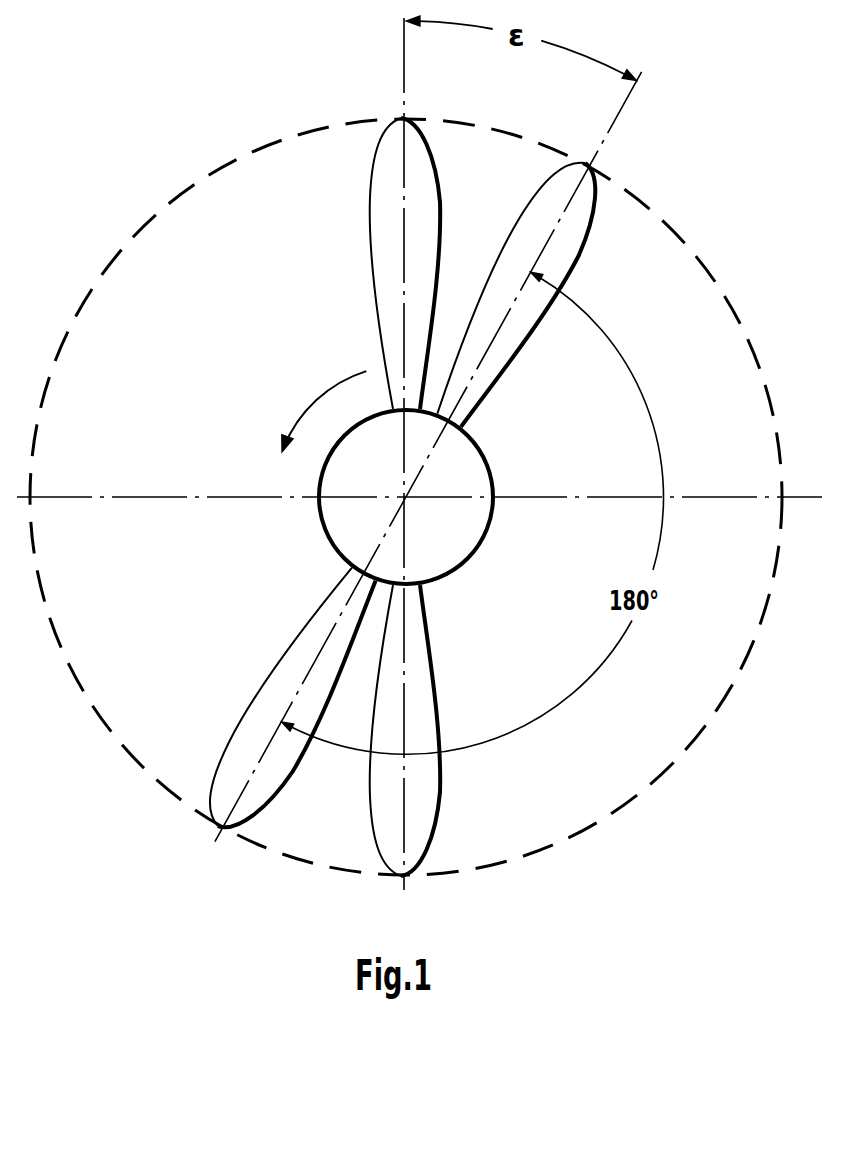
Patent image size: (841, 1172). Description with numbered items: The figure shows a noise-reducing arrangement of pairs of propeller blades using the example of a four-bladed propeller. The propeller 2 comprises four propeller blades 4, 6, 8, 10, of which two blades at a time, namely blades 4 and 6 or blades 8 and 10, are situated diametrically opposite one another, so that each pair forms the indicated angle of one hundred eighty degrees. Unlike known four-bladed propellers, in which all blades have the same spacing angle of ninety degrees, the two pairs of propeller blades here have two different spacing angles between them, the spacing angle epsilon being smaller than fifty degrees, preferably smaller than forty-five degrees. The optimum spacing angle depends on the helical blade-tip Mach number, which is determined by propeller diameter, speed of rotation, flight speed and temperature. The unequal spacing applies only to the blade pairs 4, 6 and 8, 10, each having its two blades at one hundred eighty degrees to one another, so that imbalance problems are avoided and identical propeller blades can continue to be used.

The propeller 2 is at (206, 838).
The propeller blade 4 is at (519, 292).
The propeller blade 6 is at (292, 700).
The propeller blade 8 is at (385, 263).
The propeller blade 10 is at (442, 730).